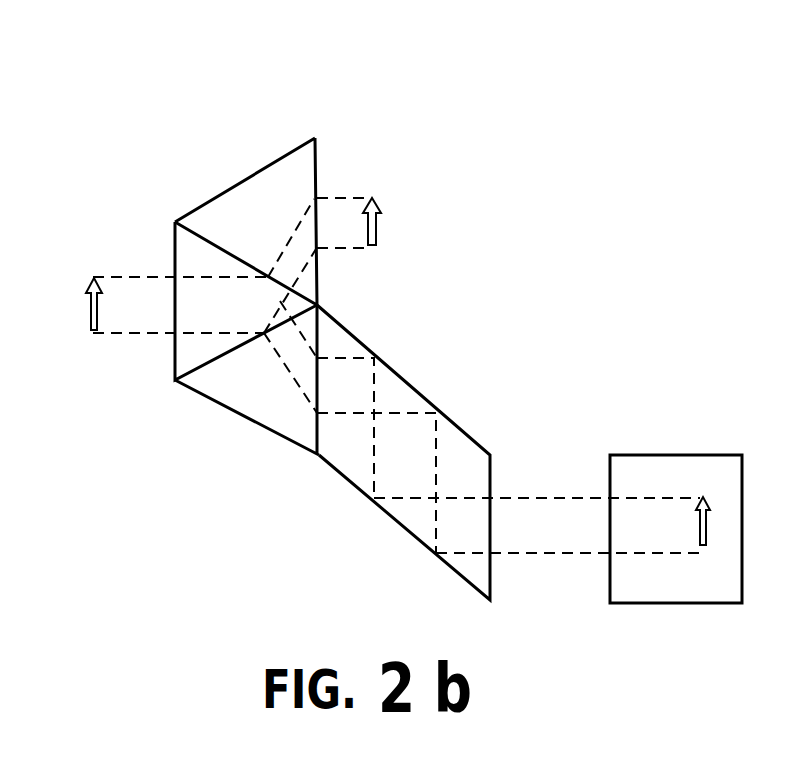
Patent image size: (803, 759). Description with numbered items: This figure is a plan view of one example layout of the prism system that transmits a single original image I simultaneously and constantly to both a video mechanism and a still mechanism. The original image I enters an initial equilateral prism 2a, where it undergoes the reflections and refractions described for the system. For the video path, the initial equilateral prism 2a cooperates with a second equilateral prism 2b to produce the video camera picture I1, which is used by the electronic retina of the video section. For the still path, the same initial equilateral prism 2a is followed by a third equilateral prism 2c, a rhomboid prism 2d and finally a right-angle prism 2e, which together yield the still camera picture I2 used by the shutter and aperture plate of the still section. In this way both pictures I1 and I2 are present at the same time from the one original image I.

The initial equilateral prism 2a is at (203, 307).
The second equilateral prism 2b is at (255, 205).
The third equilateral prism 2c is at (260, 393).
The rhomboid prism 2d is at (405, 478).
The right-angle prism 2e is at (675, 578).
The original image I is at (62, 304).
The video camera picture I1 is at (401, 148).
The still camera picture I2 is at (703, 394).